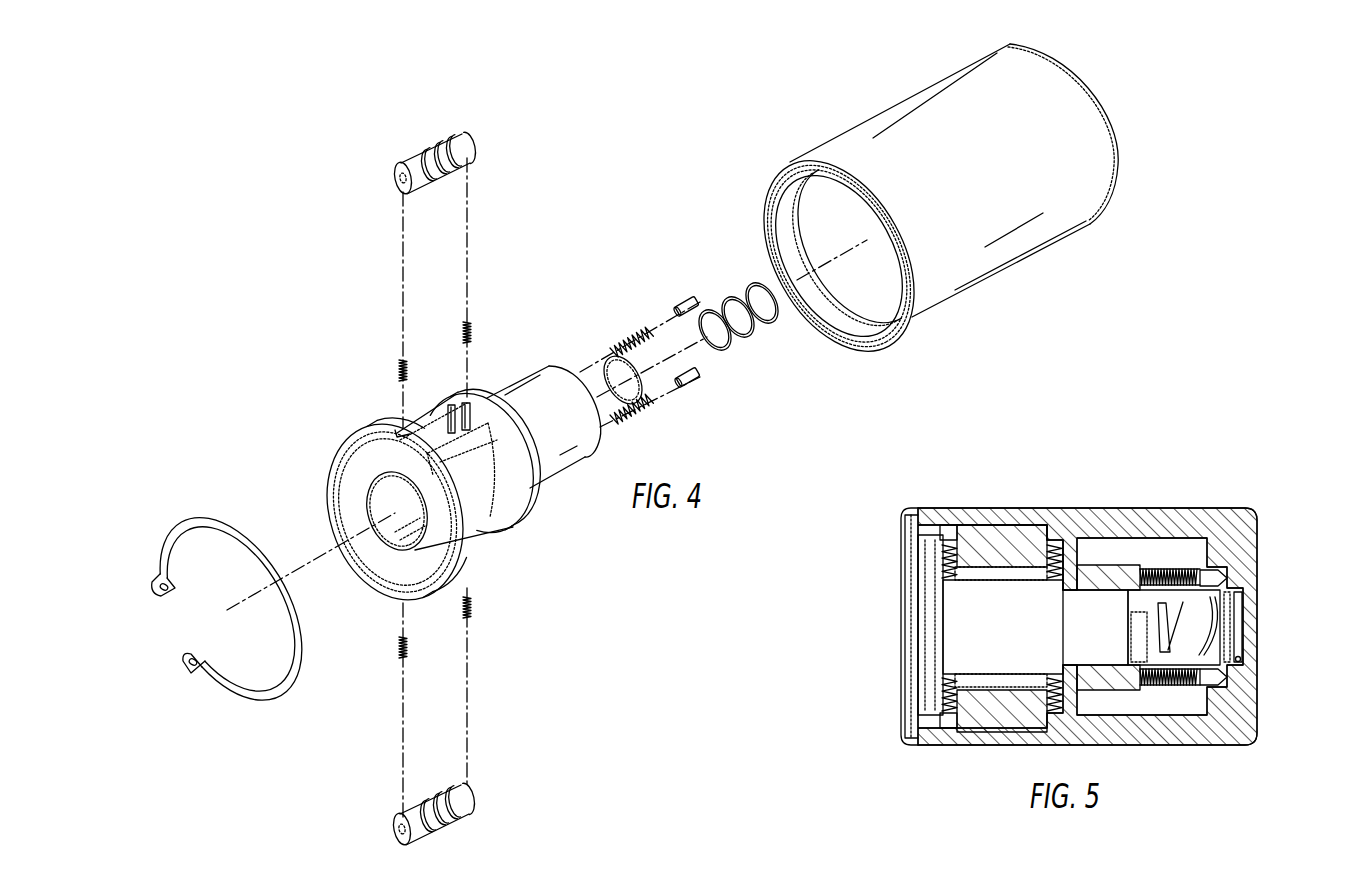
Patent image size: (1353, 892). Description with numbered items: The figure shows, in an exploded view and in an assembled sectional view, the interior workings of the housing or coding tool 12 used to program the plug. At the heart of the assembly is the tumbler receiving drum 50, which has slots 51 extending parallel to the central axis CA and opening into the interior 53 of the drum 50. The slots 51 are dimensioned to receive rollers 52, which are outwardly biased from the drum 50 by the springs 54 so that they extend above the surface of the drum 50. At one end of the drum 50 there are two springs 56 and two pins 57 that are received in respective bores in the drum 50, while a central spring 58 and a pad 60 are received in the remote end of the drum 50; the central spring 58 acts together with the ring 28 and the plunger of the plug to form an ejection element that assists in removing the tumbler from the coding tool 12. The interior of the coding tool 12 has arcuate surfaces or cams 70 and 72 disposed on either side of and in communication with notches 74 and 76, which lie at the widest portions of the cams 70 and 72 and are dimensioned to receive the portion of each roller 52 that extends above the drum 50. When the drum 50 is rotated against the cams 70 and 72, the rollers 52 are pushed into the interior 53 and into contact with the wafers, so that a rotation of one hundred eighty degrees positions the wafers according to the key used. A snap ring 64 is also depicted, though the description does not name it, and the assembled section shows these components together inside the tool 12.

In FIG. 4, the coding tool 12 is at (923, 225).
In FIG. 5, the coding tool 12 is at (1195, 506).
In FIG. 5, the ring 28 is at (1233, 625).
In FIG. 4, the tumbler receiving drum 50 is at (440, 476).
In FIG. 4, the slots 51 is at (422, 432).
In FIG. 4, the rollers 52 is at (476, 158).
In FIG. 5, the rollers 52 is at (985, 525).
In FIG. 4, the interior 53 is at (390, 493).
In FIG. 5, the interior 53 is at (1014, 627).
In FIG. 4, the springs 54 is at (398, 372).
In FIG. 5, the springs 54 is at (1052, 562).
In FIG. 4, the springs 56 is at (631, 345).
In FIG. 5, the springs 56 is at (1172, 680).
In FIG. 4, the pins 57 is at (681, 306).
In FIG. 5, the pins 57 is at (1222, 675).
In FIG. 4, the central spring 58 is at (768, 333).
In FIG. 5, the central spring 58 is at (1232, 600).
In FIG. 4, the pad 60 is at (617, 375).
In FIG. 5, the pad 60 is at (1163, 622).
In FIG. 4, the snap ring 64 is at (272, 702).
In FIG. 5, the snap ring 64 is at (912, 527).
In FIG. 4, the arcuate surface or cam 70 is at (834, 235).
In FIG. 4, the arcuate surface or cam 72 is at (812, 192).
In FIG. 4, the notch 74 is at (877, 304).
In FIG. 5, the notch 74 is at (962, 728).
In FIG. 5, the notch 76 is at (1045, 543).
In FIG. 4, the central axis CA is at (318, 562).